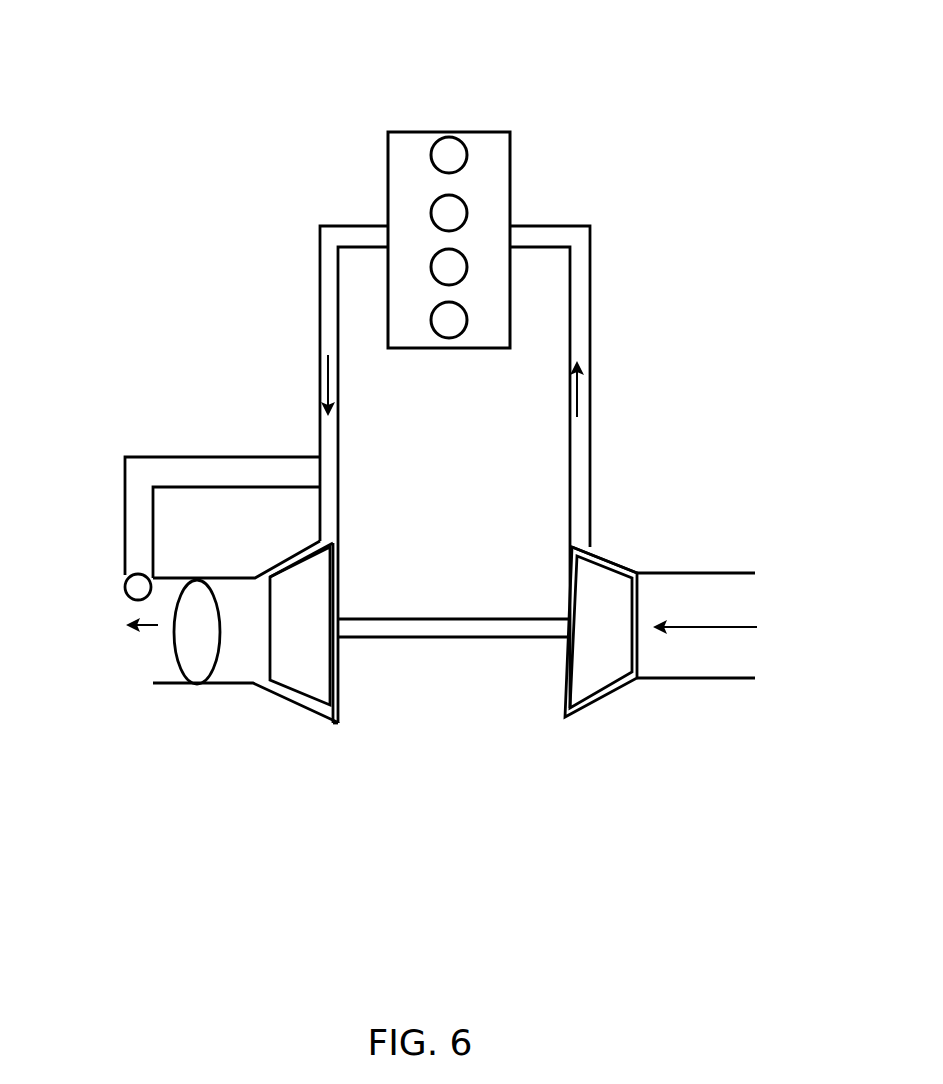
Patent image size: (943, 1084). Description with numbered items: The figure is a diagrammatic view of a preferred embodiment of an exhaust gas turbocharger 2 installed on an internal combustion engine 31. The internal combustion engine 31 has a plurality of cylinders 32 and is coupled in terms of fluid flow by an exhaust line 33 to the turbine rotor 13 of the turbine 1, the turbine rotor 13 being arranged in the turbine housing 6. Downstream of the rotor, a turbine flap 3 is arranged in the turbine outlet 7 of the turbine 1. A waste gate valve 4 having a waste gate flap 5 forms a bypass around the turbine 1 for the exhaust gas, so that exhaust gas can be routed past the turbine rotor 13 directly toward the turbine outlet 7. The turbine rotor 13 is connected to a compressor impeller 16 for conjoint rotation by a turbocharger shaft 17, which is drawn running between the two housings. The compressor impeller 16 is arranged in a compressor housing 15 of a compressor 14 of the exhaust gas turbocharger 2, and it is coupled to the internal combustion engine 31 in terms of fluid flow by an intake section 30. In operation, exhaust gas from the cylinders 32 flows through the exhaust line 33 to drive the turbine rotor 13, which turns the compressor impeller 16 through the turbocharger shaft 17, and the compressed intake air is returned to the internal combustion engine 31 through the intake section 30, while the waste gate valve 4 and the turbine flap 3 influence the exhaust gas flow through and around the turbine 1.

The turbine 1 is at (326, 742).
The exhaust gas turbocharger 2 is at (429, 834).
The turbine flap 3 is at (197, 632).
The waste gate valve 4 is at (165, 457).
The waste gate flap 5 is at (124, 588).
The turbine housing 6 is at (277, 695).
The turbine outlet 7 is at (162, 685).
The turbine rotor 13 is at (302, 667).
The compressor 14 is at (617, 704).
The compressor housing 15 is at (632, 562).
The compressor impeller 16 is at (585, 663).
The turbocharger shaft 17 is at (492, 633).
The intake section 30 is at (590, 325).
The internal combustion engine 31 is at (513, 148).
The cylinders 32 is at (431, 215).
The exhaust line 33 is at (318, 307).